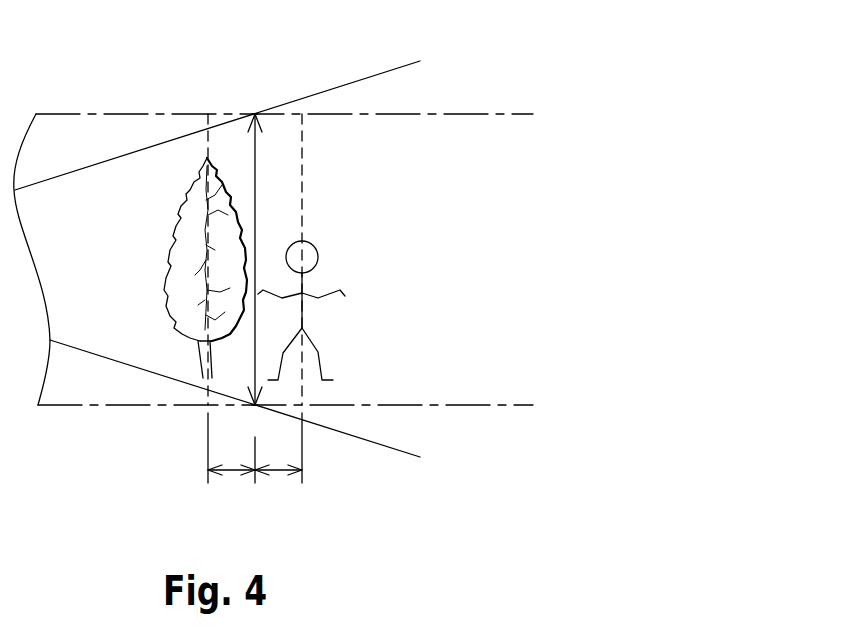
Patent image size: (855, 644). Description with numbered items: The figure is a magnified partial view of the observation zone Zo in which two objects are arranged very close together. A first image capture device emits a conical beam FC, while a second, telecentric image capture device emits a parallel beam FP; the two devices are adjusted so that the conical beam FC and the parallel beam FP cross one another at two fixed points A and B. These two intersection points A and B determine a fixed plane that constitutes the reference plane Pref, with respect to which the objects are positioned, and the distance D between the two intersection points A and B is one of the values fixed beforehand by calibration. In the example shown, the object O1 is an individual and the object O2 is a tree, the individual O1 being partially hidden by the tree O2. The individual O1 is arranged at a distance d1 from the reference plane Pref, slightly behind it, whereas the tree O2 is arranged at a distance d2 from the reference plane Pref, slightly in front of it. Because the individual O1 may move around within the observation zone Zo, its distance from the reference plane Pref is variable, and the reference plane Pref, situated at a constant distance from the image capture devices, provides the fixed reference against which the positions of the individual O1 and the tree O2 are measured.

The parallel beam FP is at (127, 113).
The conical beam FC is at (385, 73).
The intersection point A is at (255, 95).
The intersection point B is at (255, 421).
The distance between intersection points D is at (263, 259).
The reference plane Pref is at (312, 259).
The observation zone Zo is at (428, 190).
The object (individual) O1 is at (326, 267).
The object (tree) O2 is at (175, 238).
The distance of individual from reference plane d1 is at (278, 460).
The distance of tree from reference plane d2 is at (231, 310).